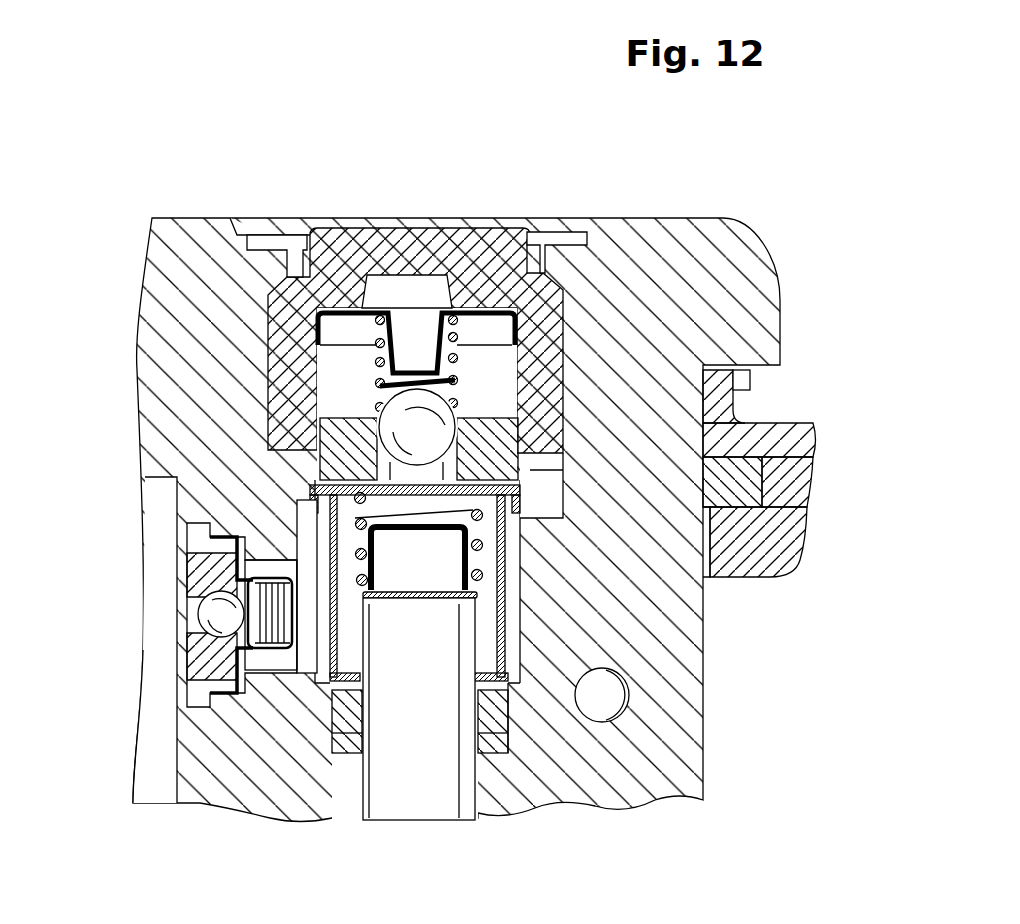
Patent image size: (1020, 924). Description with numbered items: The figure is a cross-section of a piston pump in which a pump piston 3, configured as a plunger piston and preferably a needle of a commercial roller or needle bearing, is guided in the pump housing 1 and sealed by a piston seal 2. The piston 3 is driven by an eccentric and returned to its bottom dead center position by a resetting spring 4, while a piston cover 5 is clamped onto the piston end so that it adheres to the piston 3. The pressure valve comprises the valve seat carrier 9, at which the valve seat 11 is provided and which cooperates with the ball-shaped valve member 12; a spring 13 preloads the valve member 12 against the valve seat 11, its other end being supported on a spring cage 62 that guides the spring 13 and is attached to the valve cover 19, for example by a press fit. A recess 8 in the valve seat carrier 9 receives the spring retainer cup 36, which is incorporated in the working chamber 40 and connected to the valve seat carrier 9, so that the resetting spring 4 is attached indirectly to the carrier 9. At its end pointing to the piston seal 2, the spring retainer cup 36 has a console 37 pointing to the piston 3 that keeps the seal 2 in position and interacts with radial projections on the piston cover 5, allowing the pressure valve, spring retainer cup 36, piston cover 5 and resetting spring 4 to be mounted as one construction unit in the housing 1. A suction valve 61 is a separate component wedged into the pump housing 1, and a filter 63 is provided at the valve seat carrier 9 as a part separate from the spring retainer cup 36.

The pump housing 1 is at (700, 297).
The piston seal 2 is at (497, 757).
The pump piston 3 is at (403, 785).
The resetting spring 4 is at (505, 550).
The piston cover 5 is at (628, 700).
The recess 8 is at (527, 508).
The valve seat carrier 9 is at (560, 487).
The valve seat 11 is at (375, 460).
The valve member 12 is at (392, 437).
The spring 13 is at (378, 364).
The valve cover 19 is at (497, 268).
The spring retainer cup 36 is at (478, 560).
The console 37 is at (343, 755).
The working chamber 40 is at (343, 533).
The suction valve 61 is at (207, 577).
The spring cage 62 is at (453, 300).
The filter 63 is at (482, 547).